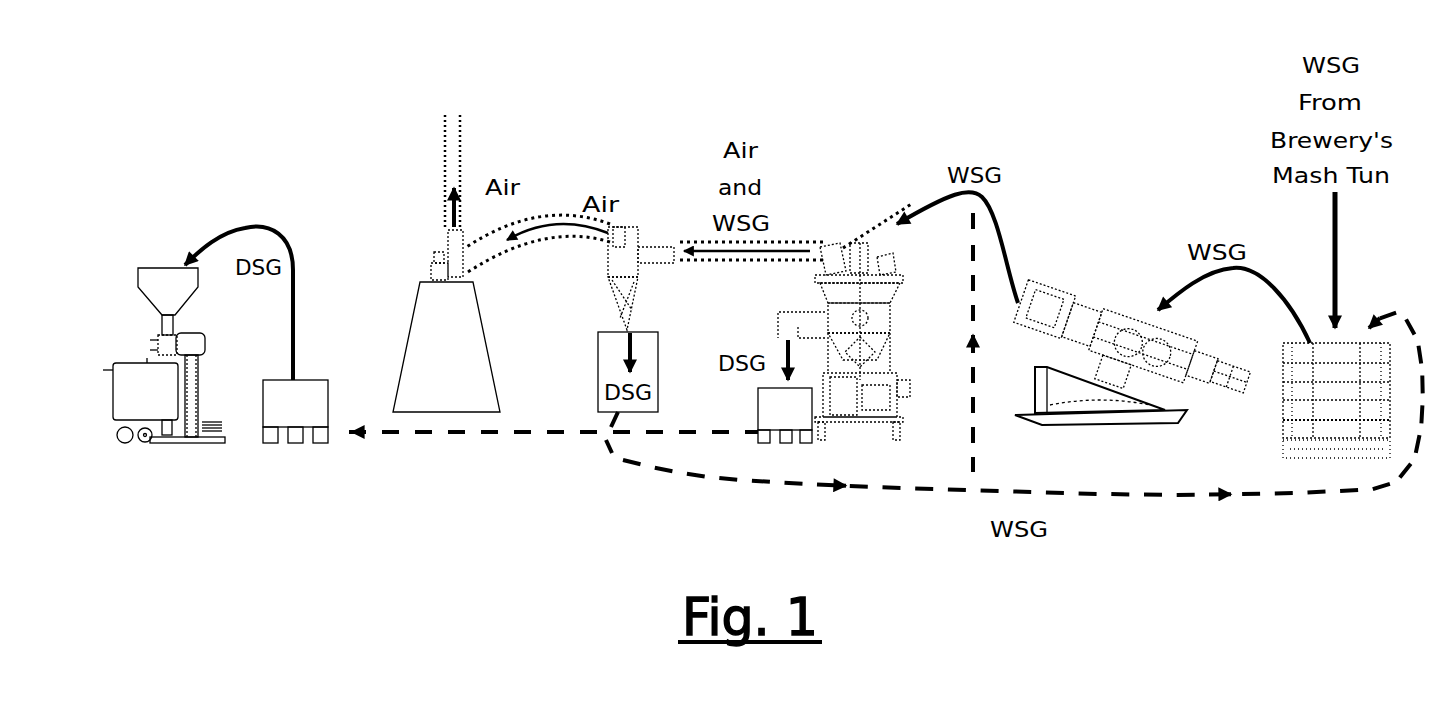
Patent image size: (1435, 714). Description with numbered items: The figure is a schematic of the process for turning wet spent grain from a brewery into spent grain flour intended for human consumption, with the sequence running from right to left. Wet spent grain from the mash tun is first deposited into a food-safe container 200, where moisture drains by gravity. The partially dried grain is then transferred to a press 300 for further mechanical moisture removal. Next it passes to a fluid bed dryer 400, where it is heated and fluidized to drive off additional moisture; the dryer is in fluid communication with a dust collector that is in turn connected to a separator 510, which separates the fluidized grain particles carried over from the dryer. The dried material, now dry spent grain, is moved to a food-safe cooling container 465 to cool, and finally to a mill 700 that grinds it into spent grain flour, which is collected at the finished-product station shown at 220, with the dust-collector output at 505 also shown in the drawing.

The food-safe container 200 is at (1322, 343).
The press 300 is at (1093, 317).
The fluid bed dryer 400 is at (893, 317).
The food-safe cooling container 465 is at (313, 414).
The cyclone separator 505 is at (649, 247).
The separator 510 is at (447, 250).
The mill 700 is at (157, 343).
The spent grain flour collection tank 220 is at (112, 388).